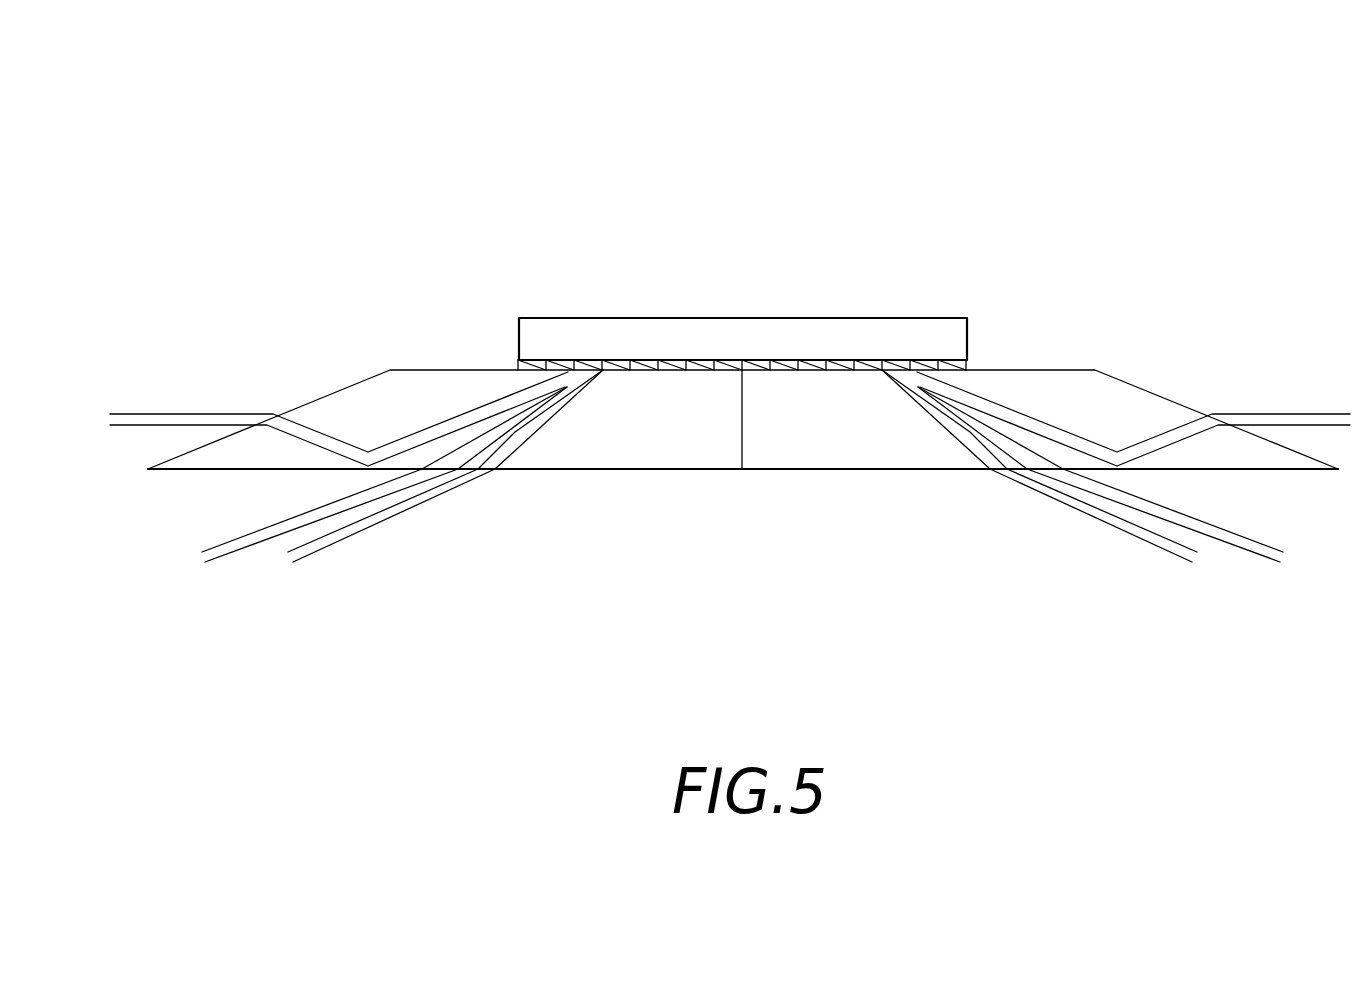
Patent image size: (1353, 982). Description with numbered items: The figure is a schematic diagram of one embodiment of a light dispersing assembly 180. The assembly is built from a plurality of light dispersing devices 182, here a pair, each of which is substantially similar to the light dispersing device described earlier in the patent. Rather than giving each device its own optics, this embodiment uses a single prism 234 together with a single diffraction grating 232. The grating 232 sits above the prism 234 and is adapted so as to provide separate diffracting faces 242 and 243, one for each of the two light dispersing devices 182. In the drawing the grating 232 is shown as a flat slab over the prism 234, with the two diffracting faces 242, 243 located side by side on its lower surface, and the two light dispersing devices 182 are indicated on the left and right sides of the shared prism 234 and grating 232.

The light dispersing assembly 180 is at (598, 187).
The diffraction grating 232 is at (855, 337).
The prism 234 is at (710, 453).
The diffracting face 242 is at (667, 372).
The diffracting face 243 is at (800, 372).
The light dispersing devices 182 is at (468, 582).